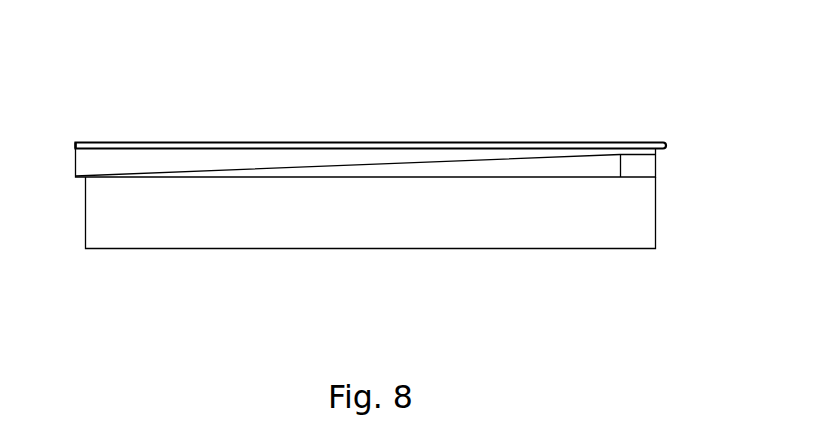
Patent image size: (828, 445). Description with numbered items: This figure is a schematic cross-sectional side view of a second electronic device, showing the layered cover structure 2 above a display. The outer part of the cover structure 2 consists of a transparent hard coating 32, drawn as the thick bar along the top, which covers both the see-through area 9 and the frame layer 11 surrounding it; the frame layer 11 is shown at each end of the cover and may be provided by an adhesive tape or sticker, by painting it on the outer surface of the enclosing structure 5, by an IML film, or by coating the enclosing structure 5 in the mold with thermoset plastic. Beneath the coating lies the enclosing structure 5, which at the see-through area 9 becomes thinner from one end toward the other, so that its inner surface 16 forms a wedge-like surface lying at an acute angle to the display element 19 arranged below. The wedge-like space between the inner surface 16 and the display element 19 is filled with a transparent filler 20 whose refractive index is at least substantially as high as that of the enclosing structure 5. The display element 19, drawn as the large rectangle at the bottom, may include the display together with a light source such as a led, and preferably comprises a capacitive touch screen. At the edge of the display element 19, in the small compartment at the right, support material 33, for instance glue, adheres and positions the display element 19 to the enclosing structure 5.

The cover structure 2 is at (235, 119).
The see-through area 9 is at (472, 107).
The enclosing structure 5 is at (340, 163).
The frame layer 11 is at (92, 142).
The inner surface 16 is at (562, 157).
The display element 19 is at (292, 223).
The transparent filler 20 is at (481, 170).
The transparent hard coating 32 is at (563, 143).
The support material 33 is at (637, 169).